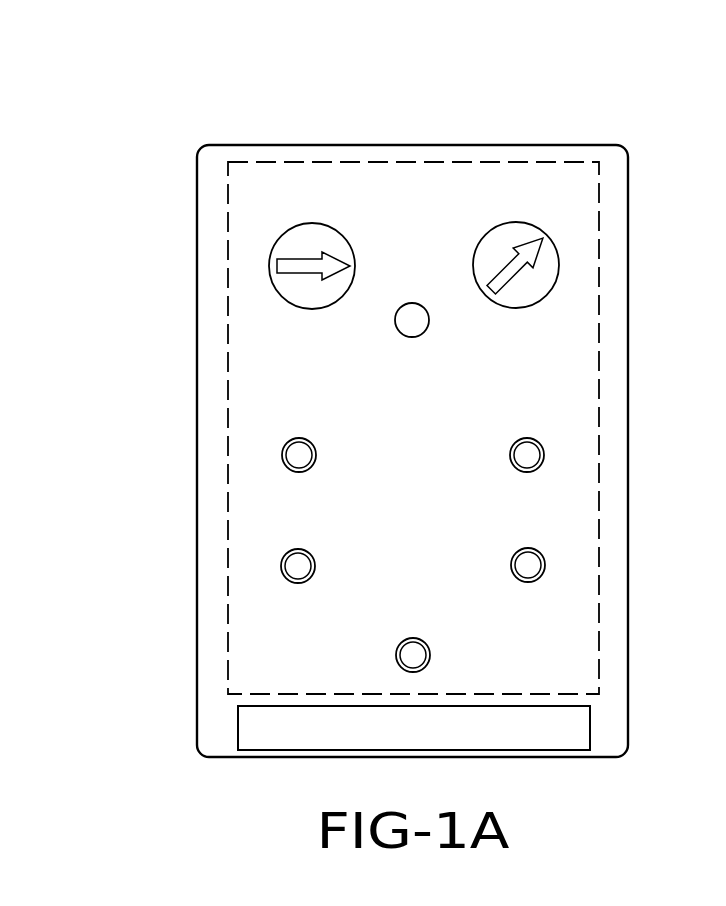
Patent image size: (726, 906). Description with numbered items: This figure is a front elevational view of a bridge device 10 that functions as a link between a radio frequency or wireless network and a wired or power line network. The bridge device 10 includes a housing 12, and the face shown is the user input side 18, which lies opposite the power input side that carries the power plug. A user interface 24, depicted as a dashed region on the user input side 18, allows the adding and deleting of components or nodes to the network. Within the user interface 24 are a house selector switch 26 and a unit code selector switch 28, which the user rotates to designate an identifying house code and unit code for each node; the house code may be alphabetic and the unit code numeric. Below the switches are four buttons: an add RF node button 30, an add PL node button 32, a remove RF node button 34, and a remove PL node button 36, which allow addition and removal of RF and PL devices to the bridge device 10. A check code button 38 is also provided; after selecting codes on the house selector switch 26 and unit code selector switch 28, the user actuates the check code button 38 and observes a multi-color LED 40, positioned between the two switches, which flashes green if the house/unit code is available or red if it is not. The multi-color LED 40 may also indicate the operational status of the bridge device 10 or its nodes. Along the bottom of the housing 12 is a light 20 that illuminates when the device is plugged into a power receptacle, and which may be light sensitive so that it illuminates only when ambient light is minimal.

The bridge device 10 is at (168, 146).
The housing 12 is at (197, 478).
The user input side 18 is at (630, 200).
The light 20 is at (580, 727).
The user interface 24 is at (600, 276).
The house selector switch 26 is at (310, 309).
The unit code selector switch 28 is at (514, 308).
The add RF node button 30 is at (298, 452).
The add PL node button 32 is at (298, 564).
The remove RF node button 34 is at (528, 453).
The remove PL node button 36 is at (528, 563).
The check code button 38 is at (413, 652).
The multi-color LED 40 is at (412, 318).